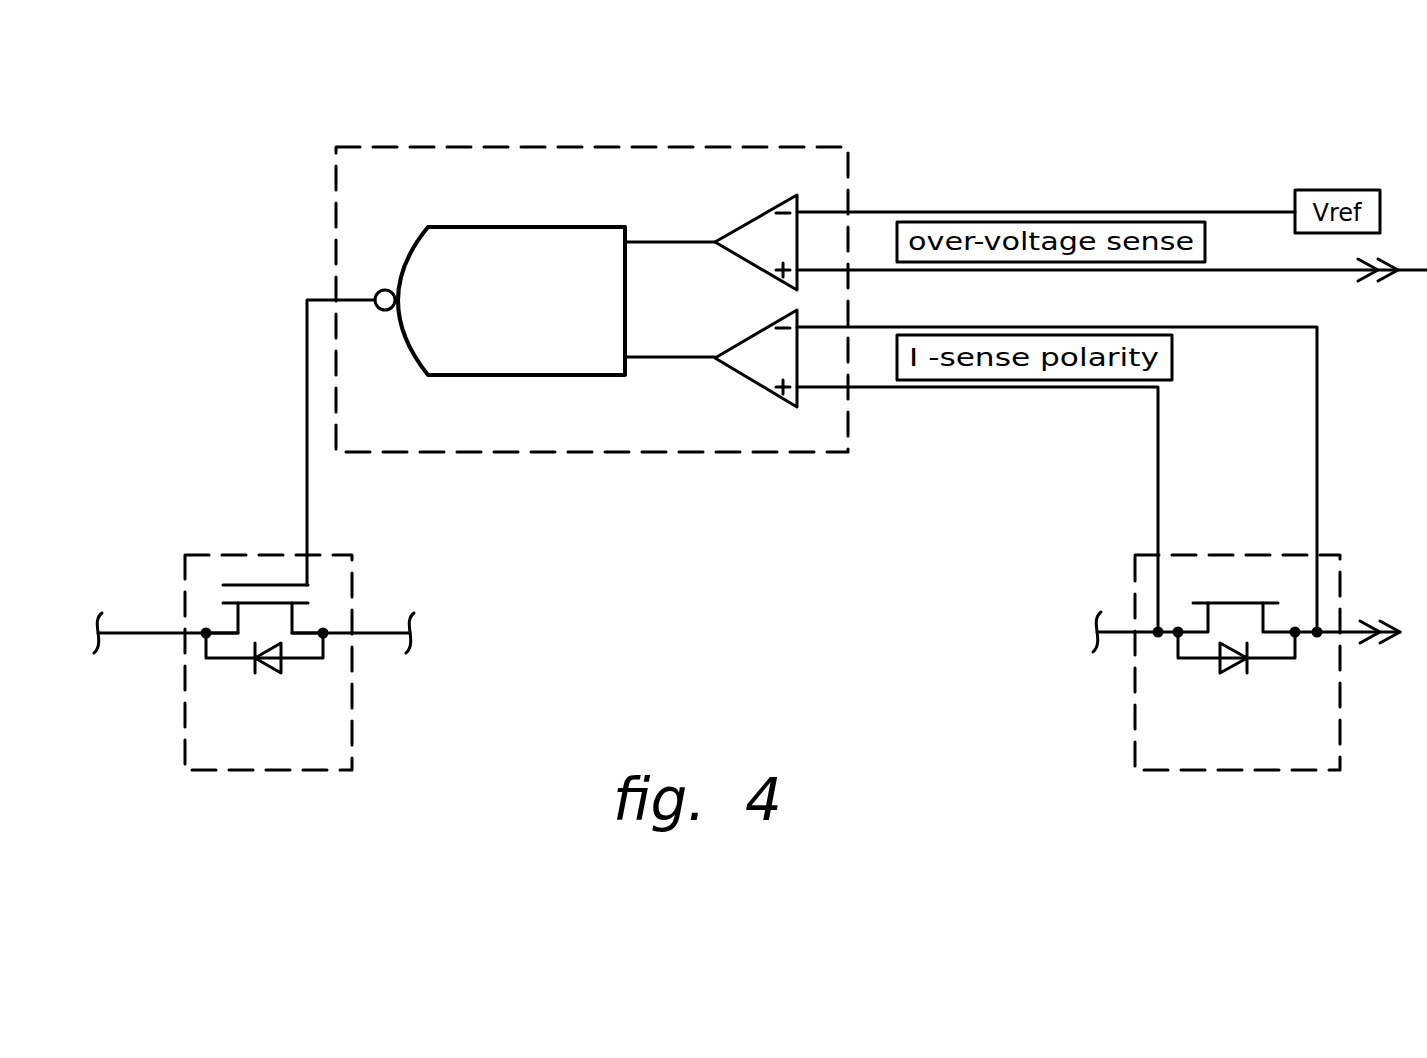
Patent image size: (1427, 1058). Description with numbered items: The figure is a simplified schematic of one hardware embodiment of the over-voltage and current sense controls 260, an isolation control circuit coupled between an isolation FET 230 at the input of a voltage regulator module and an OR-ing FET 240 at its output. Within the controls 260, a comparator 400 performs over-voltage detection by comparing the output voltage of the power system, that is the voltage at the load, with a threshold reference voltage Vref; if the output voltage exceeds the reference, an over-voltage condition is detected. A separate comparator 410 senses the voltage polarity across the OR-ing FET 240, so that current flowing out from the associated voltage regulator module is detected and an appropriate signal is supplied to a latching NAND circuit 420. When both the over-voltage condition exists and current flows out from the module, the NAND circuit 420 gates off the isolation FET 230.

The over-voltage and current sense controls 260 is at (688, 146).
The latching NAND circuit 420 is at (608, 362).
The comparator 400 is at (746, 263).
The comparator 410 is at (746, 373).
The isolation FET 230 is at (238, 553).
The OR-ing FET 240 is at (1268, 553).